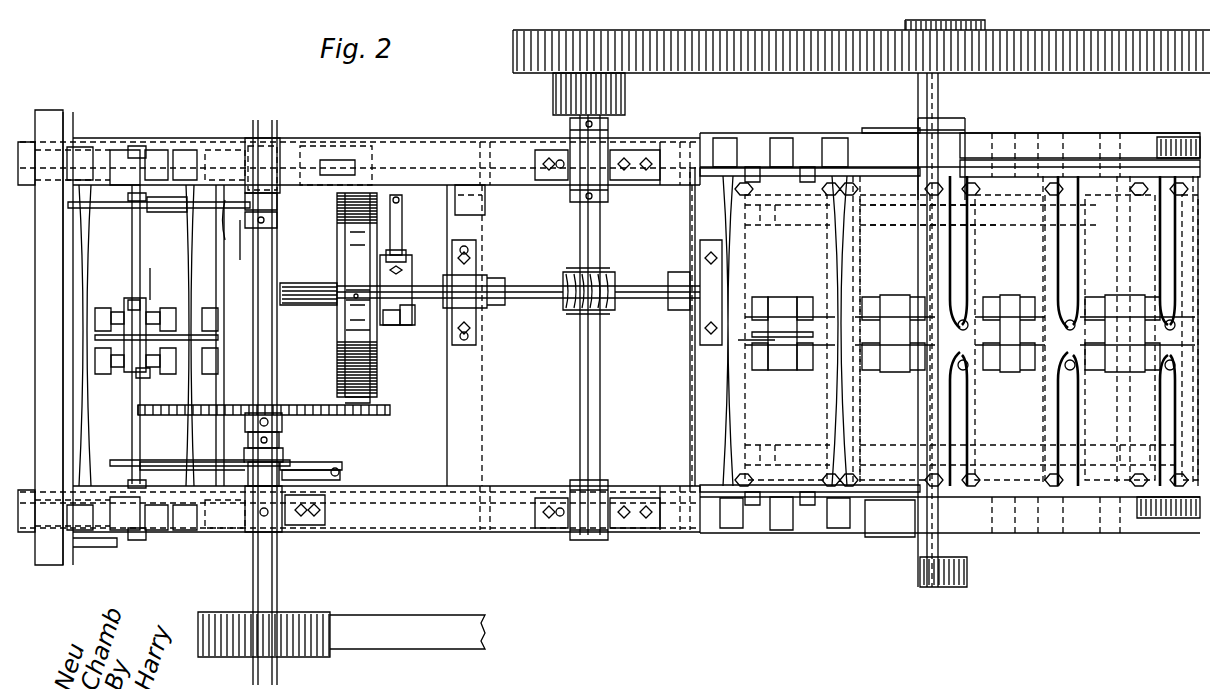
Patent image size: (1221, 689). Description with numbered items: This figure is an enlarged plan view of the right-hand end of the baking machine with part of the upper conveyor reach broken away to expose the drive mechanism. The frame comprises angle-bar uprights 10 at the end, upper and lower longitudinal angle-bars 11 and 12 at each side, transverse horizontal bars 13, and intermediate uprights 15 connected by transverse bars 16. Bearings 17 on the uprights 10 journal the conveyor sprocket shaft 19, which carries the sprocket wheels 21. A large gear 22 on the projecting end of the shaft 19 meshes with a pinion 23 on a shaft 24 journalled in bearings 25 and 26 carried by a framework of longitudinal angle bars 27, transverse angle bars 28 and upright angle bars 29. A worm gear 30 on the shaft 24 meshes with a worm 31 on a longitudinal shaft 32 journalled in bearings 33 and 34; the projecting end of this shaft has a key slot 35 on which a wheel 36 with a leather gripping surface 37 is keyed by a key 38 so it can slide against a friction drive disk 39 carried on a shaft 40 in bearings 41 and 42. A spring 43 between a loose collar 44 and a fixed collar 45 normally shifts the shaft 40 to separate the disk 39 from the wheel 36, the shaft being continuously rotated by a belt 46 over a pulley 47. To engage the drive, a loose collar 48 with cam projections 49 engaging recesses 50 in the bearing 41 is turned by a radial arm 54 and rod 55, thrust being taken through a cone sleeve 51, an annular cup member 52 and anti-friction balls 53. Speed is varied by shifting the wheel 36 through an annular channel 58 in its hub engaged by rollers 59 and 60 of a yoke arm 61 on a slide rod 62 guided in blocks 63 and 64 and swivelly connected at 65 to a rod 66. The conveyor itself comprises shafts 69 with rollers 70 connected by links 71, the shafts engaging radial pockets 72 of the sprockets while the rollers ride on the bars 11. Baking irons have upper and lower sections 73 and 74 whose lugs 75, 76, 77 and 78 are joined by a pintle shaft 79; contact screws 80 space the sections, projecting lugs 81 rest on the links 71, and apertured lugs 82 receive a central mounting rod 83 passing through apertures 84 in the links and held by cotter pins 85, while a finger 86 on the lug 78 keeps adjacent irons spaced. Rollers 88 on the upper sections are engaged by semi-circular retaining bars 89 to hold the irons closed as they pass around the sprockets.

The angle-bar uprights 10 is at (900, 120).
The upper longitudinal angle-bar 11 is at (96, 144).
The lower longitudinal angle-bar 12 is at (443, 140).
The transverse horizontal bar 13 is at (961, 128).
The intermediate uprights 15 is at (68, 112).
The transverse bars 16 is at (45, 110).
The bearings 17 is at (961, 112).
The conveyor sprocket shaft 19 is at (946, 586).
The sprocket wheels 21 is at (900, 220).
The large gear 22 is at (824, 72).
The pinion 23 is at (513, 70).
The shaft 24 is at (598, 237).
The bearing 25 is at (610, 482).
The bearing 26 is at (562, 181).
The longitudinal angle bars 27 is at (669, 189).
The transverse angle bars 28 is at (472, 392).
The upright angle bars 29 is at (502, 145).
The worm gear 30 is at (620, 285).
The worm 31 is at (612, 313).
The longitudinal shaft 32 is at (518, 302).
The bearing 33 is at (475, 325).
The bearing 34 is at (692, 318).
The key slot 35 is at (428, 312).
The friction wheel 36 is at (337, 243).
The frictional gripping peripheral surface 37 is at (345, 270).
The key 38 is at (348, 302).
The friction drive disk 39 is at (354, 415).
The shaft 40 is at (277, 372).
The bearing 41 is at (295, 494).
The bearing 42 is at (285, 149).
The spring 43 is at (277, 218).
The loose collar 44 is at (240, 214).
The collar 45 is at (255, 248).
The belt 46 is at (424, 623).
The pulley 47 is at (298, 612).
The loose collar 48 is at (285, 463).
The cam projections 49 is at (320, 468).
The recesses 50 is at (268, 501).
The cone sleeve 51 is at (280, 440).
The annular cup member 52 is at (244, 454).
The anti-friction balls 53 is at (240, 466).
The radial arm 54 is at (348, 473).
The rod 55 is at (174, 461).
The annular channel 58 is at (394, 325).
The roller 59 is at (408, 326).
The roller 60 is at (413, 272).
The yoke arm 61 is at (406, 247).
The slide rod 62 is at (404, 214).
The guide block 63 is at (368, 188).
The guide block 64 is at (487, 215).
The swivel connection 65 is at (165, 216).
The rod 66 is at (118, 213).
The shafts 69 is at (190, 290).
The rollers 70 is at (75, 132).
The links 71 is at (116, 148).
The radial pockets 72 is at (765, 222).
The upper section 73 is at (971, 337).
The lower section 74 is at (950, 268).
The apertured lug 75 is at (170, 302).
The apertured lug 76 is at (101, 304).
The apertured lug 77 is at (155, 302).
The apertured lug 78 is at (118, 313).
The pintle shaft 79 is at (122, 364).
The adjustable contact screws 80 is at (747, 190).
The projecting lugs 81 is at (748, 170).
The apertured lugs 82 is at (126, 197).
The central mounting rod 83 is at (138, 413).
The apertures 84 is at (155, 180).
The cotter pins 85 is at (152, 148).
The projecting finger 86 is at (118, 342).
The rollers 88 is at (131, 146).
The semi-circular retaining bars 89 is at (1184, 138).